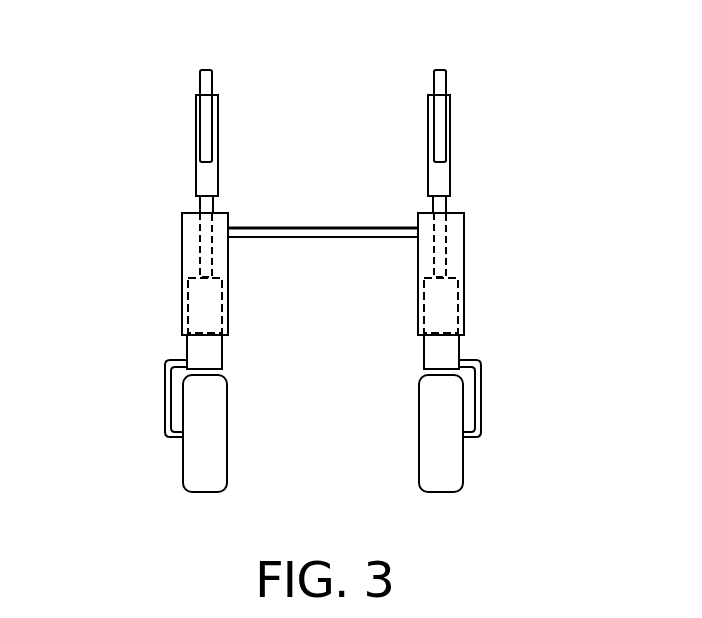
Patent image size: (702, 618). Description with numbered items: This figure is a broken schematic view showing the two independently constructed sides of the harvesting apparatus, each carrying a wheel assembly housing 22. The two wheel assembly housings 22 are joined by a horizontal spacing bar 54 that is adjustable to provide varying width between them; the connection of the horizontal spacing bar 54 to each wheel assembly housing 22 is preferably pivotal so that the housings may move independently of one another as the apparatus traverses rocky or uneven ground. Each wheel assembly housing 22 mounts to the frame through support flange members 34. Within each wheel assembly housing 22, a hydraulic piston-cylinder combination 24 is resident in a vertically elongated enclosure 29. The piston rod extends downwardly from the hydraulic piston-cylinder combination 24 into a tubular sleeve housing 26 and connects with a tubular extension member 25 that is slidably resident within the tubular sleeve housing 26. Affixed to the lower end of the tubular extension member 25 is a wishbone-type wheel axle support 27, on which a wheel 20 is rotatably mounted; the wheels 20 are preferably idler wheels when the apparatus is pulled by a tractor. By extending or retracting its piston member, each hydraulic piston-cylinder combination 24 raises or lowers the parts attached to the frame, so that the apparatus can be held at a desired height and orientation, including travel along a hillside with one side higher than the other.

The wheel 20 is at (215, 468).
The wheel assembly housing 22 is at (152, 260).
The hydraulic piston-cylinder combination 24 is at (195, 178).
The tubular extension member 25 is at (459, 346).
The tubular sleeve housing 26 is at (463, 306).
The wishbone-type wheel axle support 27 is at (164, 420).
The vertically elongated enclosure 29 is at (199, 88).
The support flange members 34 is at (406, 341).
The horizontal spacing bar 54 is at (322, 227).